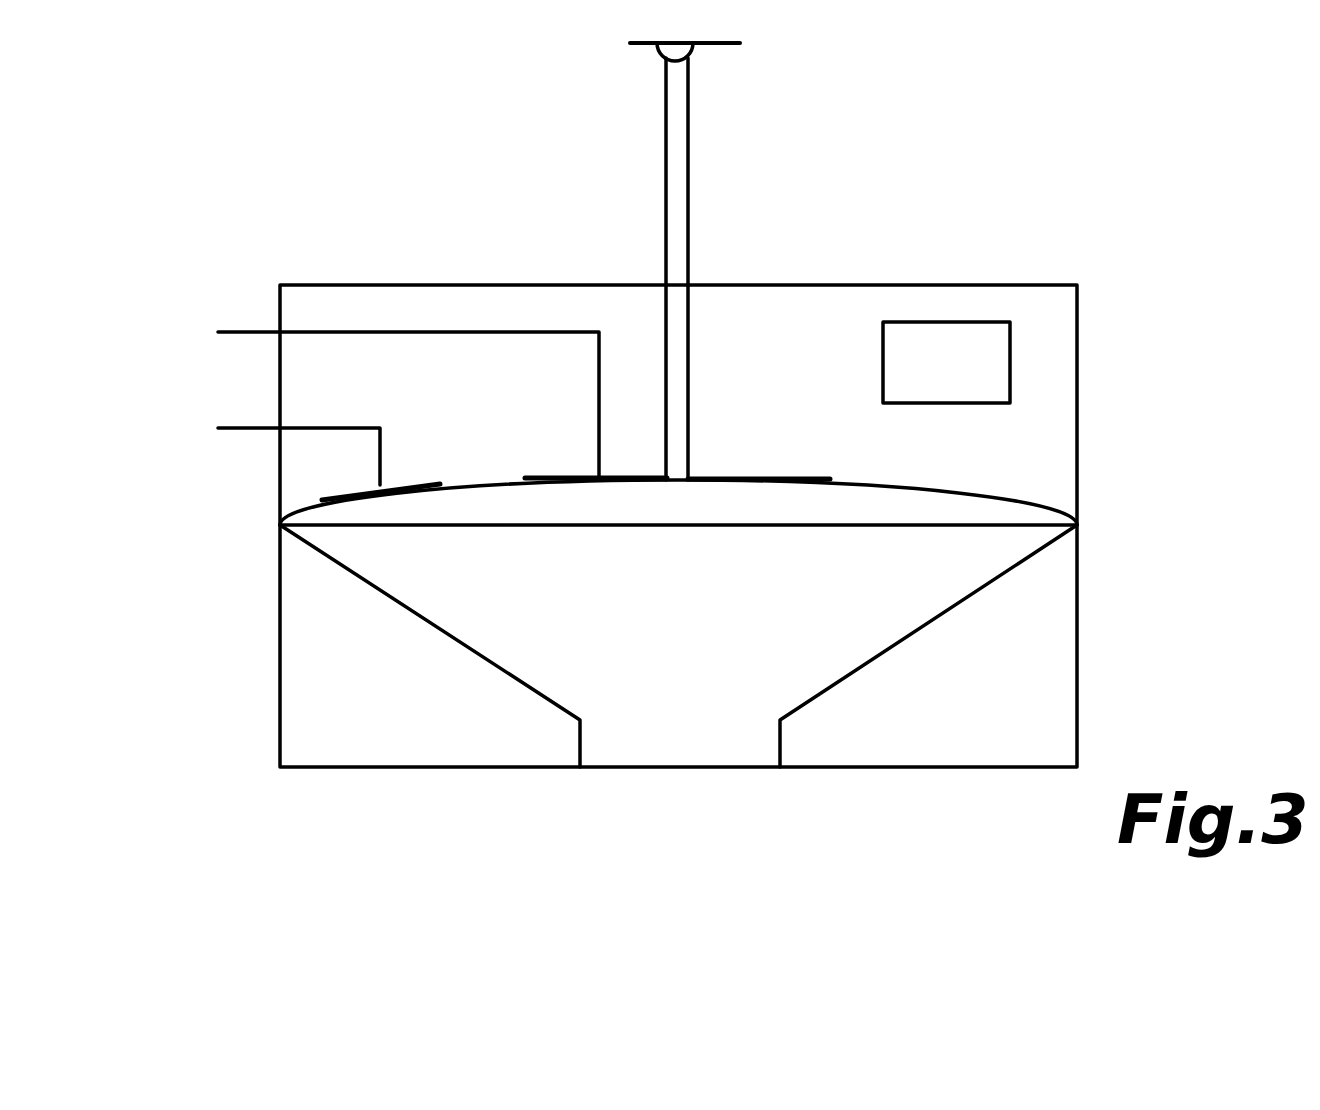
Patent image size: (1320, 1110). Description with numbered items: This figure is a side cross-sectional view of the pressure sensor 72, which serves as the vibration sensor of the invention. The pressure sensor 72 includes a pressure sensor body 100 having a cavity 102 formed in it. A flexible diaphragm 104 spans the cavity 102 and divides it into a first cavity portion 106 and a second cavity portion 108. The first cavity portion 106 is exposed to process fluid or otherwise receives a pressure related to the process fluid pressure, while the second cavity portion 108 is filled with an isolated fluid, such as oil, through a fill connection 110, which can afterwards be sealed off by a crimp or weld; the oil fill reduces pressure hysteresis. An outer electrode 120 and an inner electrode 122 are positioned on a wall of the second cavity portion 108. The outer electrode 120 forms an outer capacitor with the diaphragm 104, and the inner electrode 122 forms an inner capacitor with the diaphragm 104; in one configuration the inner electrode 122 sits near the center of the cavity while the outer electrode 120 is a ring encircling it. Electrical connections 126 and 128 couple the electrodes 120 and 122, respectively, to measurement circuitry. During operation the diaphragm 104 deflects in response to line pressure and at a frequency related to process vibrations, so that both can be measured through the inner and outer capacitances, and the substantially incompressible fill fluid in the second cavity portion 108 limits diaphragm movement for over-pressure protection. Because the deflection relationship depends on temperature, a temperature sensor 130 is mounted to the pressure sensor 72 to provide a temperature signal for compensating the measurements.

The pressure sensor 72 is at (1035, 385).
The pressure sensor body 100 is at (1050, 667).
The cavity 102 is at (423, 590).
The flexible diaphragm 104 is at (390, 523).
The first cavity portion 106 is at (701, 602).
The second cavity portion 108 is at (405, 508).
The fill connection 110 is at (693, 60).
The outer electrode 120 is at (386, 491).
The inner electrode 122 is at (562, 478).
The electrical connection 126 is at (250, 428).
The electrical connection 128 is at (240, 332).
The temperature sensor 130 is at (963, 360).